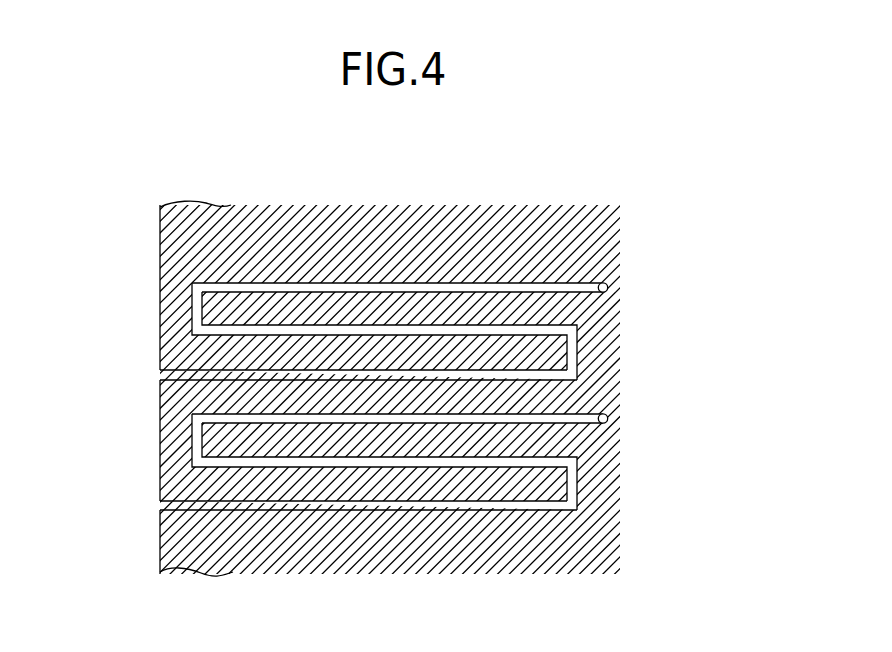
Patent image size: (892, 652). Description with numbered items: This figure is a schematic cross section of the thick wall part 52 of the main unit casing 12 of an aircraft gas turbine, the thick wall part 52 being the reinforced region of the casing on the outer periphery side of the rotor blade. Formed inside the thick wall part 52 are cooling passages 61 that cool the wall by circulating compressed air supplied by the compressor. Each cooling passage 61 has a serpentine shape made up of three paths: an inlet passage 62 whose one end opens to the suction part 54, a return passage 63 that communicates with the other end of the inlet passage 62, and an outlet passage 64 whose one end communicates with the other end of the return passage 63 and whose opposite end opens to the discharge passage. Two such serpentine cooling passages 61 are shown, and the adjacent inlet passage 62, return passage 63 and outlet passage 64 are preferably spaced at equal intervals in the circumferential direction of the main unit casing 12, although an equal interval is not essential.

The main unit casing 12 is at (446, 382).
The thick wall part 52 is at (263, 222).
The suction part 54 is at (75, 386).
The cooling passage 61 is at (406, 382).
The inlet passage 62 is at (214, 374).
The return passage 63 is at (393, 310).
The outlet passage 64 is at (469, 283).